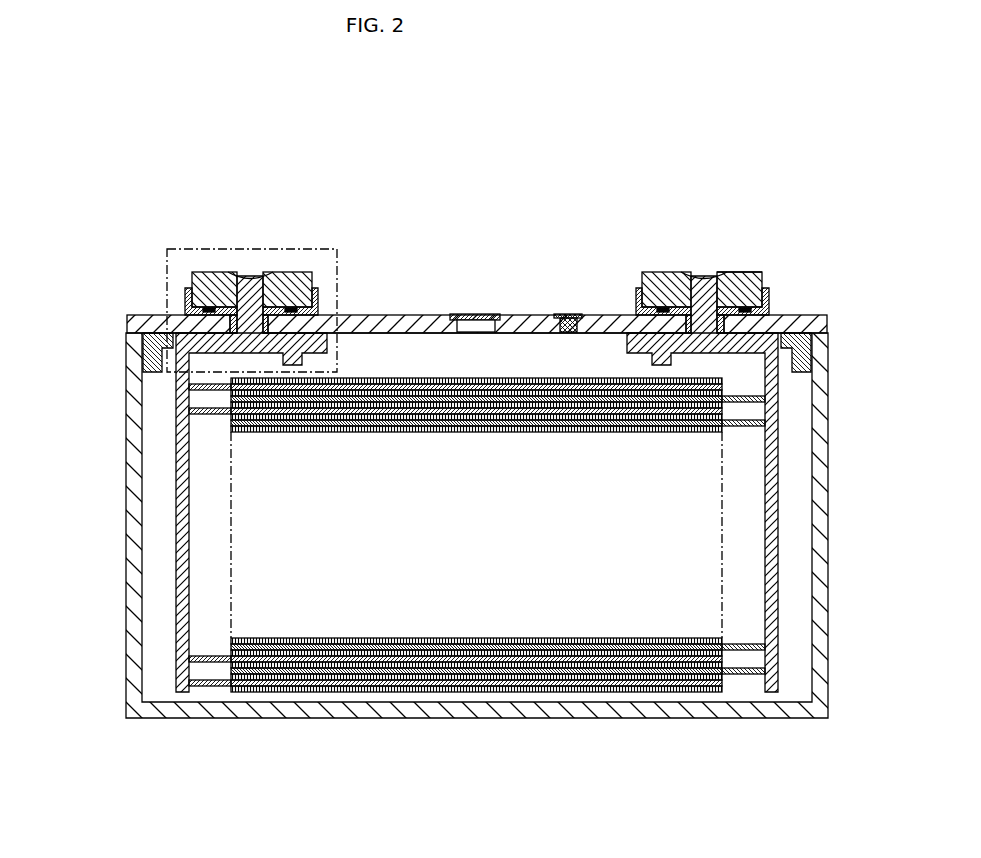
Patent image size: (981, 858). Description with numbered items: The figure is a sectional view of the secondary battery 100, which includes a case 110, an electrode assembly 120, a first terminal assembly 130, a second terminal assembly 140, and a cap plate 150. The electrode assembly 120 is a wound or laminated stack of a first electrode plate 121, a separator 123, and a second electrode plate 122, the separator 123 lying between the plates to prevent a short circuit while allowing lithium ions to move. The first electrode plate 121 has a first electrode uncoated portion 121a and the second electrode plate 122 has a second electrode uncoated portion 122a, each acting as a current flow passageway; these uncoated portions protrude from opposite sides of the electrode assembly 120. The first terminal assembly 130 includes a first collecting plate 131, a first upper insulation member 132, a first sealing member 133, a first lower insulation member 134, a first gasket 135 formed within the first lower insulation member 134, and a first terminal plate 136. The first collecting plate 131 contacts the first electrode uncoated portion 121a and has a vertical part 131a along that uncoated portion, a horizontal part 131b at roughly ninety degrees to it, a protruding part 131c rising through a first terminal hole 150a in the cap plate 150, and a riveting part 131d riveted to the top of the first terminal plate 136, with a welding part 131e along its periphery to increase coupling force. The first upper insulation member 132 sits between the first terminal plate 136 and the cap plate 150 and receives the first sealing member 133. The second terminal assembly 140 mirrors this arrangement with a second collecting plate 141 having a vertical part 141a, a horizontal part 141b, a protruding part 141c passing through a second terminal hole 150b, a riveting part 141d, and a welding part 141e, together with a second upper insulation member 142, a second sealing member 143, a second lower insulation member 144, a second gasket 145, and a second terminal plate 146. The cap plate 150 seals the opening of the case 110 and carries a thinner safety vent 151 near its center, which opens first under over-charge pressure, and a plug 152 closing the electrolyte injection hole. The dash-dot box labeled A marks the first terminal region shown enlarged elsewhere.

The secondary battery 100 is at (825, 143).
The case 110 is at (830, 421).
The electrode assembly 120 is at (478, 579).
The first electrode plate 121 is at (455, 582).
The first electrode uncoated portion 121a is at (210, 692).
The second electrode plate 122 is at (499, 588).
The second electrode uncoated portion 122a is at (745, 675).
The separator 123 is at (492, 688).
The first terminal assembly 130 is at (218, 434).
The first collecting plate 131 is at (218, 441).
The vertical part 131a is at (178, 473).
The horizontal part 131b is at (197, 343).
The protruding part 131c is at (249, 285).
The riveting part 131d is at (228, 278).
The welding part 131e is at (221, 264).
The first upper insulation member 132 is at (288, 274).
The first sealing member 133 is at (318, 290).
The first lower insulation member 134 is at (328, 344).
The first gasket 135 is at (207, 326).
The first terminal plate 136 is at (185, 283).
The second terminal assembly 140 is at (737, 436).
The second collecting plate 141 is at (737, 436).
The vertical part 141a is at (778, 478).
The horizontal part 141b is at (790, 352).
The protruding part 141c is at (751, 282).
The riveting part 141d is at (703, 286).
The welding part 141e is at (731, 264).
The second upper insulation member 142 is at (670, 306).
The second sealing member 143 is at (686, 320).
The second lower insulation member 144 is at (626, 342).
The second gasket 145 is at (830, 319).
The second terminal plate 146 is at (768, 283).
The cap plate 150 is at (477, 297).
The first terminal hole 150a is at (336, 330).
The second terminal hole 150b is at (608, 322).
The safety vent 151 is at (476, 315).
The plug 152 is at (565, 315).
The enlarged region A is at (283, 249).